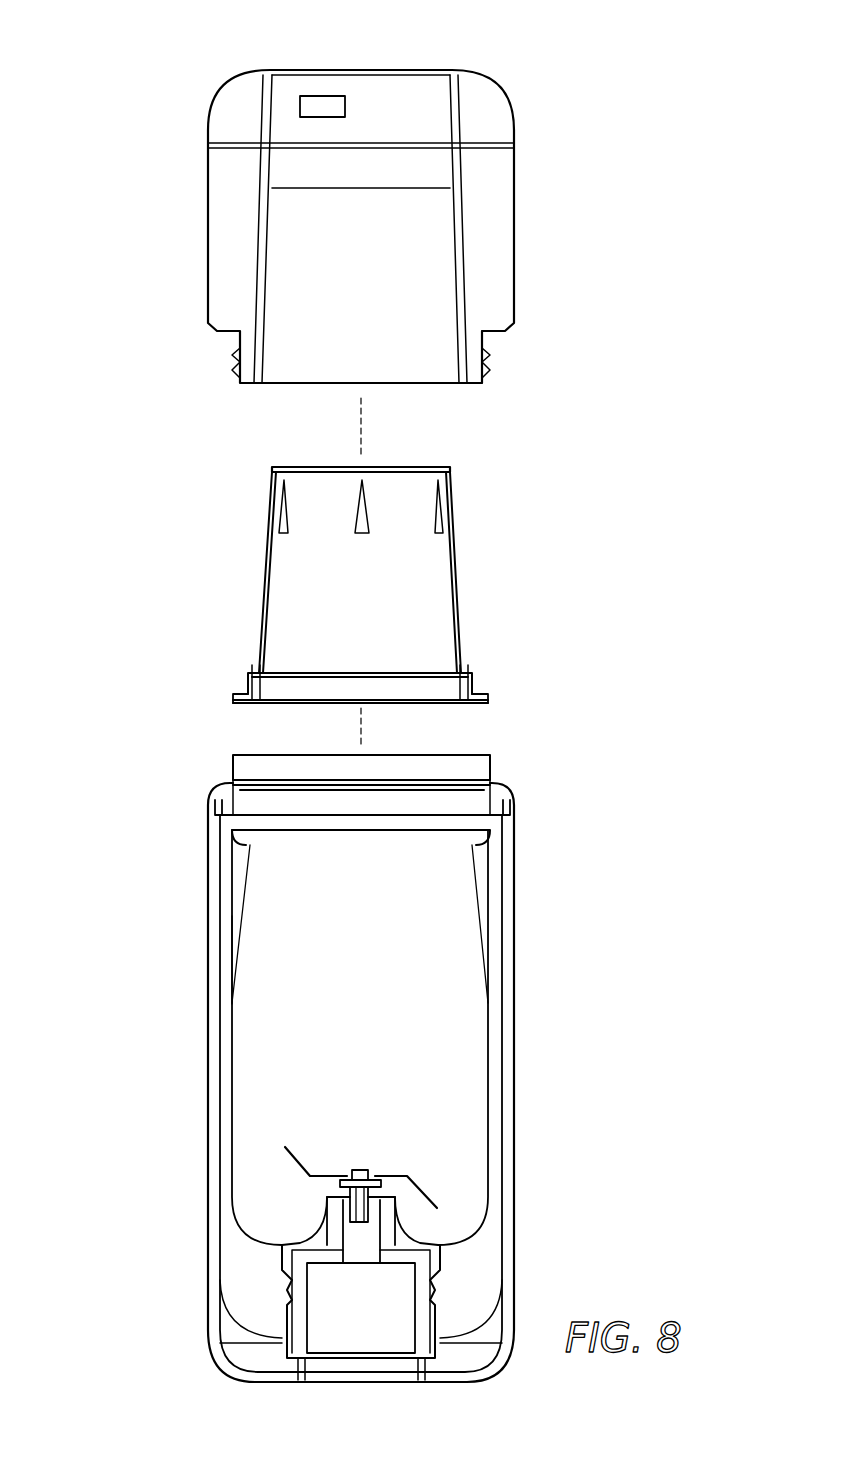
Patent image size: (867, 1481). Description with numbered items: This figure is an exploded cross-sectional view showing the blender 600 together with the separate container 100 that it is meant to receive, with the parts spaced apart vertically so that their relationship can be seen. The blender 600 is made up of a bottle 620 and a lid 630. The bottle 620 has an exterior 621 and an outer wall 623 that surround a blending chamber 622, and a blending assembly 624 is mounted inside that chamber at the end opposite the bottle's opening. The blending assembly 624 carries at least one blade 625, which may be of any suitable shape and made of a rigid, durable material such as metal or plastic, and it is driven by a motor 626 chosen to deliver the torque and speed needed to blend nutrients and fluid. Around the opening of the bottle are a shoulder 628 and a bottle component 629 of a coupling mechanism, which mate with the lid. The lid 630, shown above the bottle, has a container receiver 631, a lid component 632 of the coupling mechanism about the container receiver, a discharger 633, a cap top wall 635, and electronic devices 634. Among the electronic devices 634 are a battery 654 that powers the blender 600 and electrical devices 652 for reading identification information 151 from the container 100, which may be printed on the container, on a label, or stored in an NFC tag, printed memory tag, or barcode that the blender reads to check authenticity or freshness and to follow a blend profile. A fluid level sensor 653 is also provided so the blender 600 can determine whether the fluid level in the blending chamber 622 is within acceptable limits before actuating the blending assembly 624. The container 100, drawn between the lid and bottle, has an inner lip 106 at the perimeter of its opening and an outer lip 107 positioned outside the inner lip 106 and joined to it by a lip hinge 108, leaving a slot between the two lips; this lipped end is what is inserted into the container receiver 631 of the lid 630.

The blender 600 is at (515, 58).
The lid 630 is at (514, 245).
The cap top wall 635 is at (360, 72).
The battery 654 is at (300, 98).
The electronic devices 634 is at (397, 103).
The discharger 633 is at (393, 163).
The container receiver 631 is at (455, 212).
The electrical devices 652 is at (308, 190).
The lid component 632 is at (487, 370).
The container 100 is at (492, 520).
The identification information 151 is at (318, 467).
The lip hinge 108 is at (255, 668).
The inner lip 106 is at (252, 681).
The outer lip 107 is at (243, 700).
The bottle 620 is at (515, 1045).
The bottle component 629 is at (490, 782).
The shoulder 628 is at (490, 862).
The exterior 621 is at (513, 900).
The blending chamber 622 is at (487, 958).
The outer wall 623 is at (503, 1163).
The fluid level sensor 653 is at (232, 1004).
The blending assembly 624 is at (393, 1157).
The blade 625 is at (300, 1173).
The motor 626 is at (380, 1290).